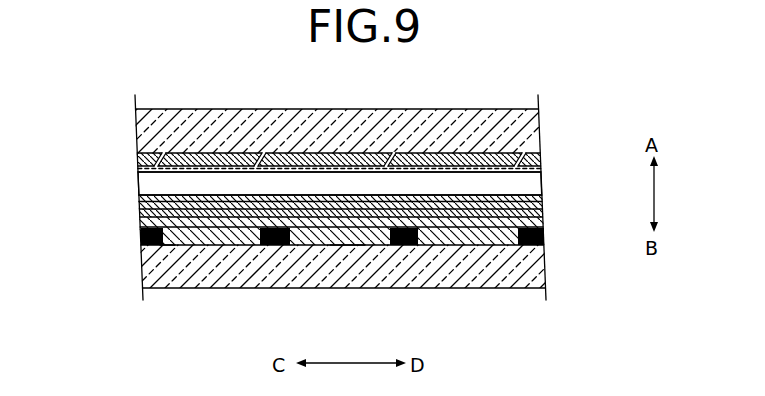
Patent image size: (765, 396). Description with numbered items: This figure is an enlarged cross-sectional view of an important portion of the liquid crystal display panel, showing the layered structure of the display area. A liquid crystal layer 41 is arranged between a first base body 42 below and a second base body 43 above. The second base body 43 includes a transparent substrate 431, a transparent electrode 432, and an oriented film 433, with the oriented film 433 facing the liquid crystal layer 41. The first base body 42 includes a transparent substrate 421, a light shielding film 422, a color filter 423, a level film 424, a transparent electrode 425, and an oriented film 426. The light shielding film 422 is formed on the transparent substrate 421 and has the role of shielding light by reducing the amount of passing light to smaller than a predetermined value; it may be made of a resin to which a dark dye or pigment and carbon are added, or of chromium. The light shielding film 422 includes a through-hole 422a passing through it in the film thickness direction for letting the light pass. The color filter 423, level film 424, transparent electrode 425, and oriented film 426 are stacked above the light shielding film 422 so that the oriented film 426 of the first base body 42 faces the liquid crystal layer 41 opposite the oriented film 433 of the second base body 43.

The second base body 43 is at (342, 115).
The transparent substrate 431 is at (537, 127).
The transparent electrode 432 is at (141, 158).
The oriented film 433 is at (536, 158).
The liquid crystal layer 41 is at (148, 191).
The first base body 42 is at (342, 264).
The transparent substrate 421 is at (546, 266).
The light shielding film 422 is at (142, 240).
The through-hole 422a is at (165, 246).
The color filter 423 is at (347, 243).
The level film 424 is at (340, 270).
The transparent electrode 425 is at (148, 219).
The oriented film 426 is at (541, 200).